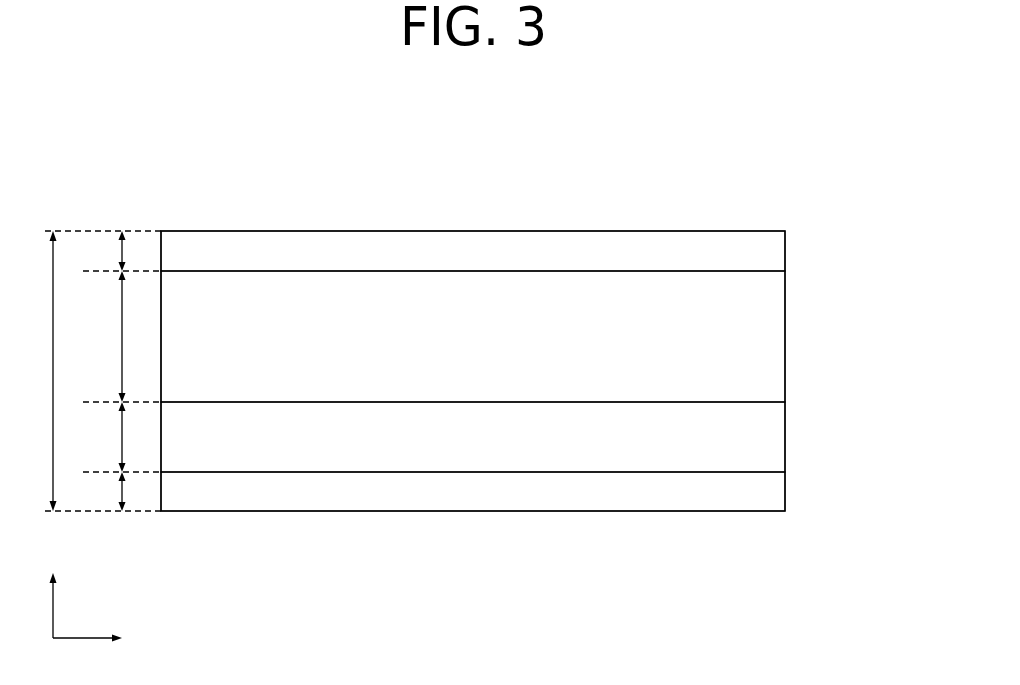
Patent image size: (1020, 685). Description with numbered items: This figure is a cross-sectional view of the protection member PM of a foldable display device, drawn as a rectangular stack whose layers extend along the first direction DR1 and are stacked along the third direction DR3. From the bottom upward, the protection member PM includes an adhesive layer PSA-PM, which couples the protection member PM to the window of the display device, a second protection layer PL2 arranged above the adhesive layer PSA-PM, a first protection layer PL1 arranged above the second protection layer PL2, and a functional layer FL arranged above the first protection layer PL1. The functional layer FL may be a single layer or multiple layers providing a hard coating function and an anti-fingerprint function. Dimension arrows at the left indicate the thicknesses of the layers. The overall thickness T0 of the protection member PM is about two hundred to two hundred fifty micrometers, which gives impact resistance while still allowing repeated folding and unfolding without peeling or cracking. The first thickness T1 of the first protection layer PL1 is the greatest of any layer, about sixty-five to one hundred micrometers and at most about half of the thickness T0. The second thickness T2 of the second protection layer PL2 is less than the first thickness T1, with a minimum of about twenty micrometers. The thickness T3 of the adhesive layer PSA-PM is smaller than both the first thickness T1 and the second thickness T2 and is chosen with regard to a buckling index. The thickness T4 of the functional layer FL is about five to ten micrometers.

The protection member PM is at (736, 162).
The functional layer FL is at (773, 253).
The first protection layer PL1 is at (773, 340).
The second protection layer PL2 is at (773, 440).
The adhesive layer PSA-PM is at (773, 495).
The thickness of the protection member T0 is at (38, 371).
The first thickness T1 is at (106, 336).
The second thickness T2 is at (106, 437).
The thickness of the adhesive layer T3 is at (106, 491).
The thickness of the functional layer T4 is at (106, 251).
The first direction DR1 is at (113, 639).
The third direction DR3 is at (57, 590).